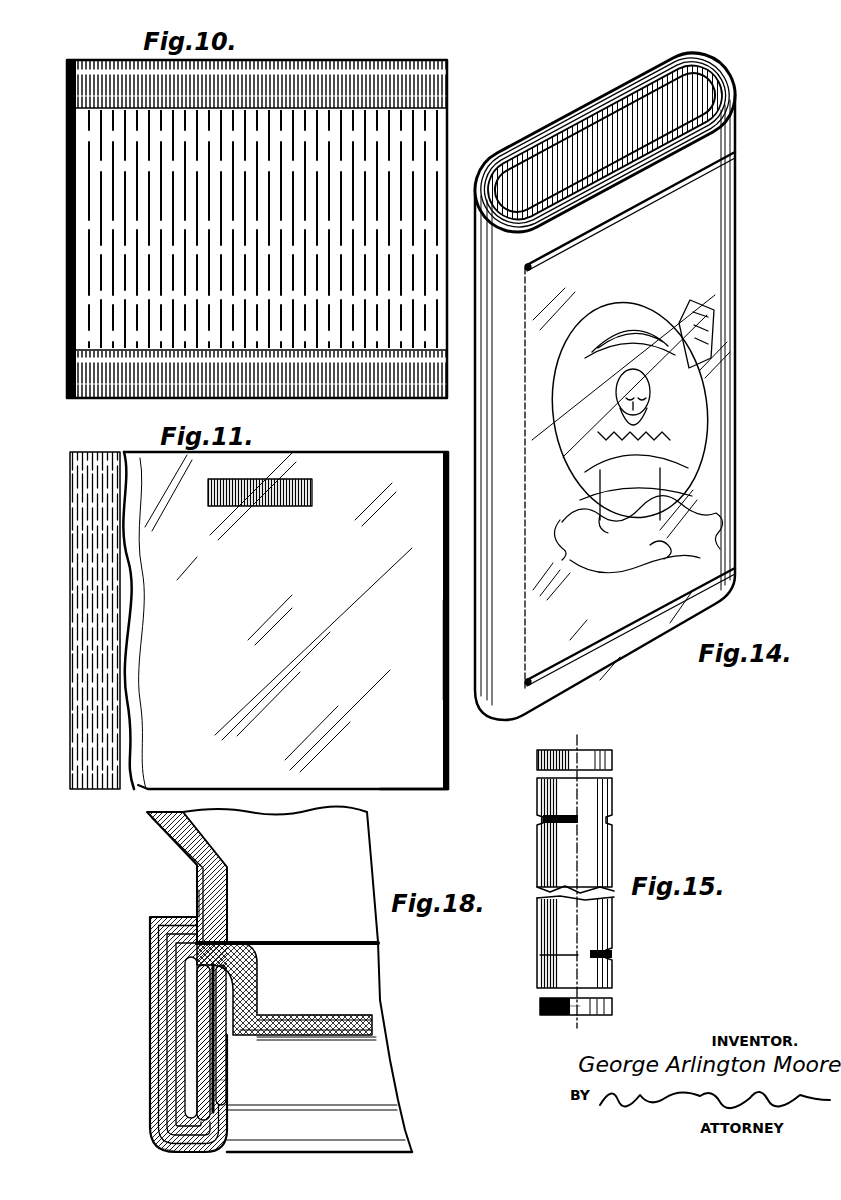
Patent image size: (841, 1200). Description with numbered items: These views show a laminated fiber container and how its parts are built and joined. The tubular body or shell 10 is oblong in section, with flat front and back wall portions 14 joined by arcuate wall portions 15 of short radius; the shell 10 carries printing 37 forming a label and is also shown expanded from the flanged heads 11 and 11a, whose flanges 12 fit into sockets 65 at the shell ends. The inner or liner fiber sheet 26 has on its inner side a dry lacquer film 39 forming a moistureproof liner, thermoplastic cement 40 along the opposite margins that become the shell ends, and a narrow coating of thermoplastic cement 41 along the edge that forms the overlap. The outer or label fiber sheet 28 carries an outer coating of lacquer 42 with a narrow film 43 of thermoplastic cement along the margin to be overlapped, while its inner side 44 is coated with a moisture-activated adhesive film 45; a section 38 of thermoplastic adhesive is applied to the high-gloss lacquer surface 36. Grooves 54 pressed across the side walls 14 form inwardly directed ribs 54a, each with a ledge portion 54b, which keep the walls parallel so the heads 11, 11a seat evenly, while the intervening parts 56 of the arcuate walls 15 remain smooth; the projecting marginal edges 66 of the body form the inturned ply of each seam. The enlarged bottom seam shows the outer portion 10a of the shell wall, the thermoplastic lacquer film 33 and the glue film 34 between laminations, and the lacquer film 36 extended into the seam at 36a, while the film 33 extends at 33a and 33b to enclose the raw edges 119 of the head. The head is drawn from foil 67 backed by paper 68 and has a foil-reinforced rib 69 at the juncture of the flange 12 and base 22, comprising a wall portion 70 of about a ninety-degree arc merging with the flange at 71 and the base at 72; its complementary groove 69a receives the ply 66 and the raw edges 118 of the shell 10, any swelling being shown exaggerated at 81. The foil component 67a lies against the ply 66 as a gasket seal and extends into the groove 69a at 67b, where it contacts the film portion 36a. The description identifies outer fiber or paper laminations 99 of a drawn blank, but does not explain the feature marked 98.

In FIG. 14, the tubular body or shell 10 is at (742, 363).
In FIG. 18, the outer portion of the shell wall 10a is at (167, 1022).
In FIG. 15, the flanged head 11 is at (612, 758).
In FIG. 15, the flanged head 11a is at (612, 1009).
In FIG. 18, the flanged head 11a is at (358, 1014).
In FIG. 18, the flange 12 is at (185, 1053).
In FIG. 14, the flat front and back wall portions 14 is at (700, 275).
In FIG. 14, the arcuate wall portions 15 is at (490, 311).
In FIG. 15, the base 22 is at (558, 763).
In FIG. 18, the base 22 is at (304, 1038).
In FIG. 10, the inner or liner fiber sheet 26 is at (440, 130).
In FIG. 11, the outer or label fiber sheet 28 is at (412, 782).
In FIG. 18, the outer or label fiber sheet 28 is at (321, 979).
In FIG. 18, the thermoplastic lacquer film 33 is at (228, 890).
In FIG. 18, the impervious film portion 33a is at (200, 1079).
In FIG. 18, the impervious film portion 33b is at (240, 1103).
In FIG. 18, the adhesive or glue film 34 is at (158, 994).
In FIG. 11, the high gloss non-thermoplastic lacquer film 36 is at (416, 463).
In FIG. 14, the high gloss non-thermoplastic lacquer film 36 is at (705, 210).
In FIG. 18, the high gloss non-thermoplastic lacquer film 36 is at (150, 966).
In FIG. 18, the impervious film portion 36a is at (300, 1013).
In FIG. 14, the printing 37 is at (680, 512).
In FIG. 11, the thermoplastic adhesive section 38 is at (312, 492).
In FIG. 10, the dry lacquer film 39 is at (260, 132).
In FIG. 10, the thermoplastic cement 40 is at (366, 72).
In FIG. 10, the thermoplastic cement coating 41 is at (68, 222).
In FIG. 11, the outer lacquer coating 42 is at (148, 790).
In FIG. 18, the outer lacquer coating 42 is at (142, 806).
In FIG. 11, the thermoplastic cement film 43 is at (448, 742).
In FIG. 11, the inner side of the outer sheet 44 is at (82, 790).
In FIG. 11, the adhesive film 45 is at (80, 604).
In FIG. 14, the grooves 54 is at (652, 210).
In FIG. 18, the grooves 54 is at (200, 882).
In FIG. 14, the inwardly directed ribs or shoulders 54a is at (626, 143).
In FIG. 18, the inwardly directed ribs or shoulders 54a is at (228, 872).
In FIG. 18, the ledge portion 54b is at (200, 915).
In FIG. 14, the intervening parts of the arcuate walls 56 is at (494, 270).
In FIG. 14, the sockets 65 is at (716, 95).
In FIG. 15, the sockets 65 is at (600, 793).
In FIG. 14, the projecting marginal edges 66 is at (488, 172).
In FIG. 15, the projecting marginal edges 66 is at (538, 790).
In FIG. 18, the projecting marginal edges 66 is at (221, 1079).
In FIG. 18, the foil layer 67 is at (330, 1038).
In FIG. 18, the foil component of the flange 67a is at (208, 1058).
In FIG. 18, the foil component of the rib 67b is at (266, 976).
In FIG. 18, the paper layers 68 is at (304, 1017).
In FIG. 18, the foil reinforced rib 69 is at (258, 957).
In FIG. 15, the groove 69a is at (554, 1010).
In FIG. 18, the groove 69a is at (262, 942).
In FIG. 18, the wall portion 70 is at (262, 980).
In FIG. 18, the juncture with flange 71 is at (192, 917).
In FIG. 18, the juncture with base 72 is at (252, 1002).
In FIG. 18, the swelling of material 81 is at (262, 992).
In FIG. 18, the bottom fold 98 is at (168, 1150).
In FIG. 18, the outer fiber or paper laminations 99 is at (225, 1096).
In FIG. 18, the raw edges of the shell 118 is at (246, 932).
In FIG. 18, the raw edges of the heads 119 is at (225, 1133).